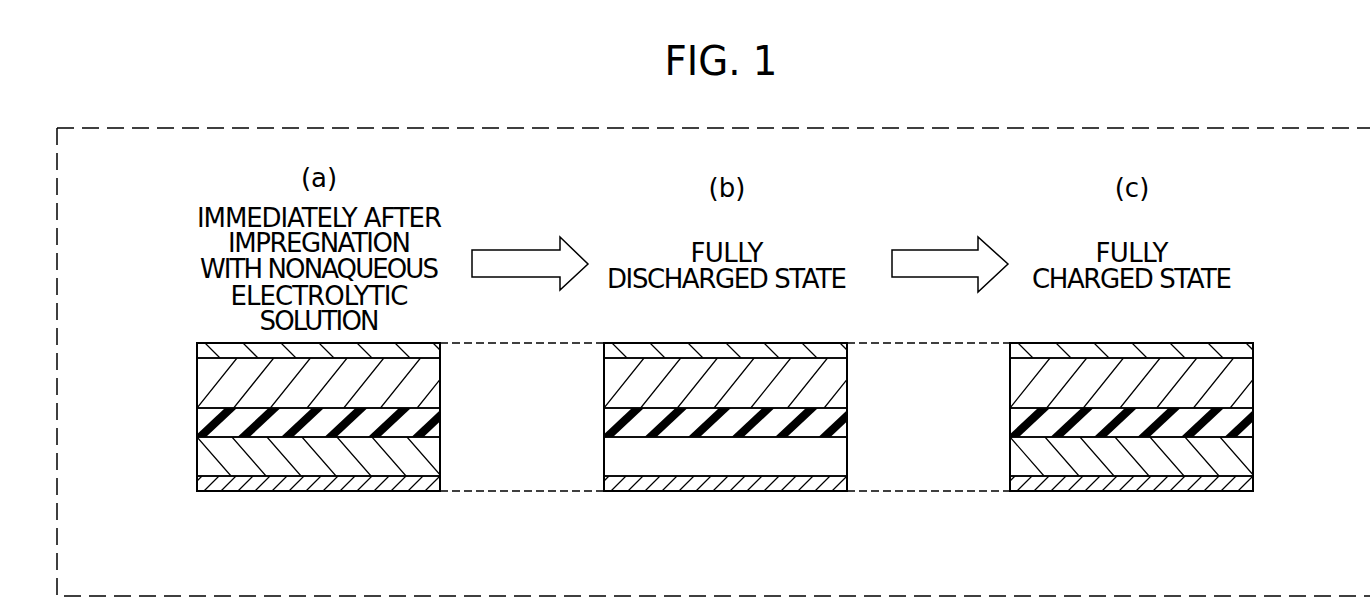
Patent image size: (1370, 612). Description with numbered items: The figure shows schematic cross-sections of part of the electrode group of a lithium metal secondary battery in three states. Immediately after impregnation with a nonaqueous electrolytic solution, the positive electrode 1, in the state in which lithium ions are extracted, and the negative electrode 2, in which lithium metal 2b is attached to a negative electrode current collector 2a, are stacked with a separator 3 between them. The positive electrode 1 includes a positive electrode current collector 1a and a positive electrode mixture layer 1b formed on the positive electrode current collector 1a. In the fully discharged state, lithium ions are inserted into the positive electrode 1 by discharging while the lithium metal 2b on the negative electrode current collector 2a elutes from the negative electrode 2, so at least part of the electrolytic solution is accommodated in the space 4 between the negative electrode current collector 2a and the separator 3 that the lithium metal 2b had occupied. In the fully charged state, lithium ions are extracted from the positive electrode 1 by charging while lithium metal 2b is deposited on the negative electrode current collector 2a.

The positive electrode 1 is at (719, 364).
The positive electrode current collector 1a is at (212, 353).
The positive electrode mixture layer 1b is at (212, 378).
The negative electrode 2 is at (719, 490).
The negative electrode current collector 2a is at (215, 478).
The lithium metal 2b is at (215, 447).
The separator 3 is at (207, 428).
The space 4 is at (807, 457).